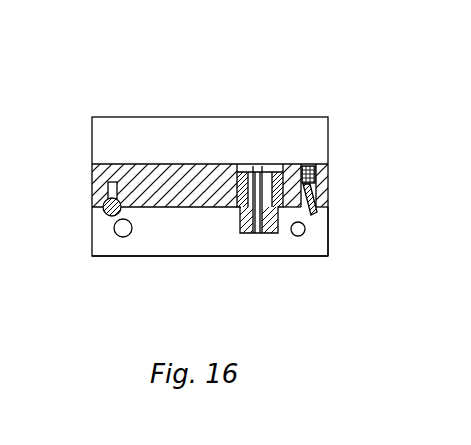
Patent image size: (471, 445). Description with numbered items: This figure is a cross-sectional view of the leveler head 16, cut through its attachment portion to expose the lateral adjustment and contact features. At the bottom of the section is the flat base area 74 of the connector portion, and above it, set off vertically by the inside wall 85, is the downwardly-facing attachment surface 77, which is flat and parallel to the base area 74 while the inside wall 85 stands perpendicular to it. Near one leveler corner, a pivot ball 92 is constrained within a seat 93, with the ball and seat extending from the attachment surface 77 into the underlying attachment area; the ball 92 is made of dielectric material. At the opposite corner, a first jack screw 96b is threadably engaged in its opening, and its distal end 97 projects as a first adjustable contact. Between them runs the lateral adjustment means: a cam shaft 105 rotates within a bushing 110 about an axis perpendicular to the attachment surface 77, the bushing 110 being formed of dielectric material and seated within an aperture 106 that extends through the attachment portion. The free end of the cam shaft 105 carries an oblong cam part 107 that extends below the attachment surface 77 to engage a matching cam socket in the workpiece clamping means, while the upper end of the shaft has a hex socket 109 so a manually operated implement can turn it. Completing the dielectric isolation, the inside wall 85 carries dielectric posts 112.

The leveler head 16 is at (99, 103).
The flat base area 74 is at (139, 264).
The attachment surface 77 is at (181, 204).
The inside wall 85 is at (318, 245).
The ball 92 is at (104, 214).
The seat 93 is at (109, 190).
The first jack screw 96b is at (308, 176).
The distal end 97 is at (311, 206).
The cam shaft 105 is at (251, 163).
The aperture 106 is at (301, 163).
The cam part 107 is at (240, 232).
The hex socket 109 is at (257, 163).
The bushing 110 is at (277, 163).
The dielectric posts 112 is at (122, 230).